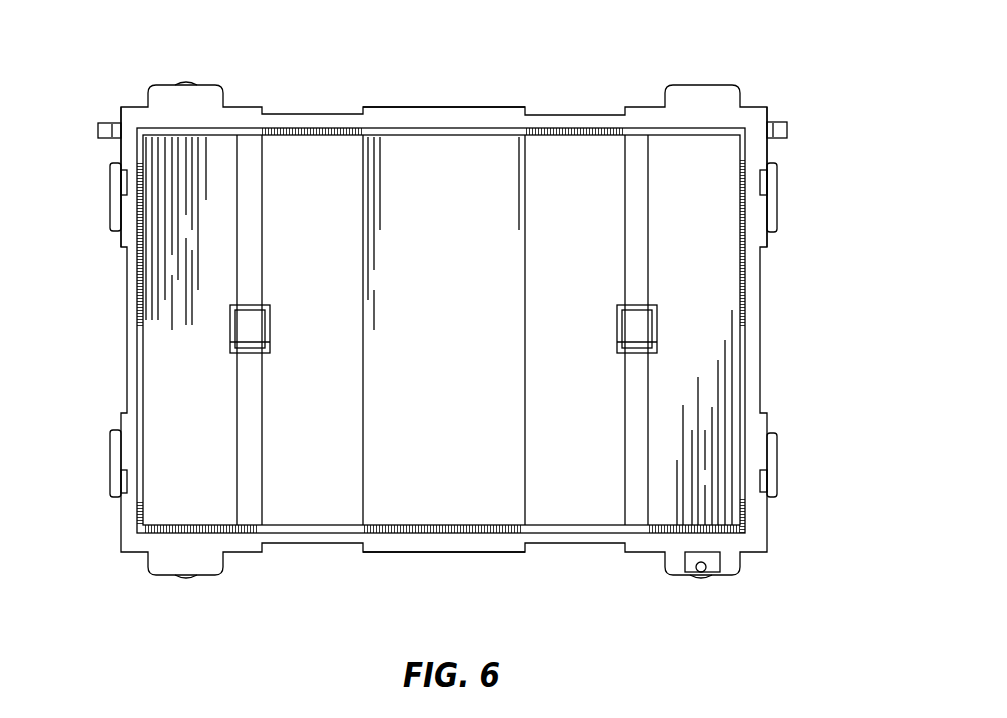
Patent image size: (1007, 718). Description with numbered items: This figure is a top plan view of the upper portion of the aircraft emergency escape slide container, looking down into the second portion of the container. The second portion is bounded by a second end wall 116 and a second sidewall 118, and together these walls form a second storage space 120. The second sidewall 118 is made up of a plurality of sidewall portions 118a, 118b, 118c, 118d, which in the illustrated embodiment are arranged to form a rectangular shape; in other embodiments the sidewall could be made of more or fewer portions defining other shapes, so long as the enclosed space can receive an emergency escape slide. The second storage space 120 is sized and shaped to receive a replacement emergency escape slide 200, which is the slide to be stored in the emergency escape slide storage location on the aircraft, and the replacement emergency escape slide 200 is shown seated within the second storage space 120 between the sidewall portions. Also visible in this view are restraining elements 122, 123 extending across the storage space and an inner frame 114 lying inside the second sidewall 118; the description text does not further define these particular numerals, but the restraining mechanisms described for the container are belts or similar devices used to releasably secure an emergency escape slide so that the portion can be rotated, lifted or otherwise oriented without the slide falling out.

The inner frame 114 is at (238, 120).
The second end wall 116 is at (440, 170).
The second sidewall 118 is at (302, 544).
The sidewall portion 118a is at (125, 272).
The sidewall portion 118b is at (463, 107).
The sidewall portion 118c is at (760, 272).
The sidewall portion 118d is at (443, 553).
The second storage space 120 is at (655, 270).
The right divider bar 122 is at (627, 177).
The left divider bar 123 is at (257, 180).
The replacement emergency escape slide 200 is at (710, 318).